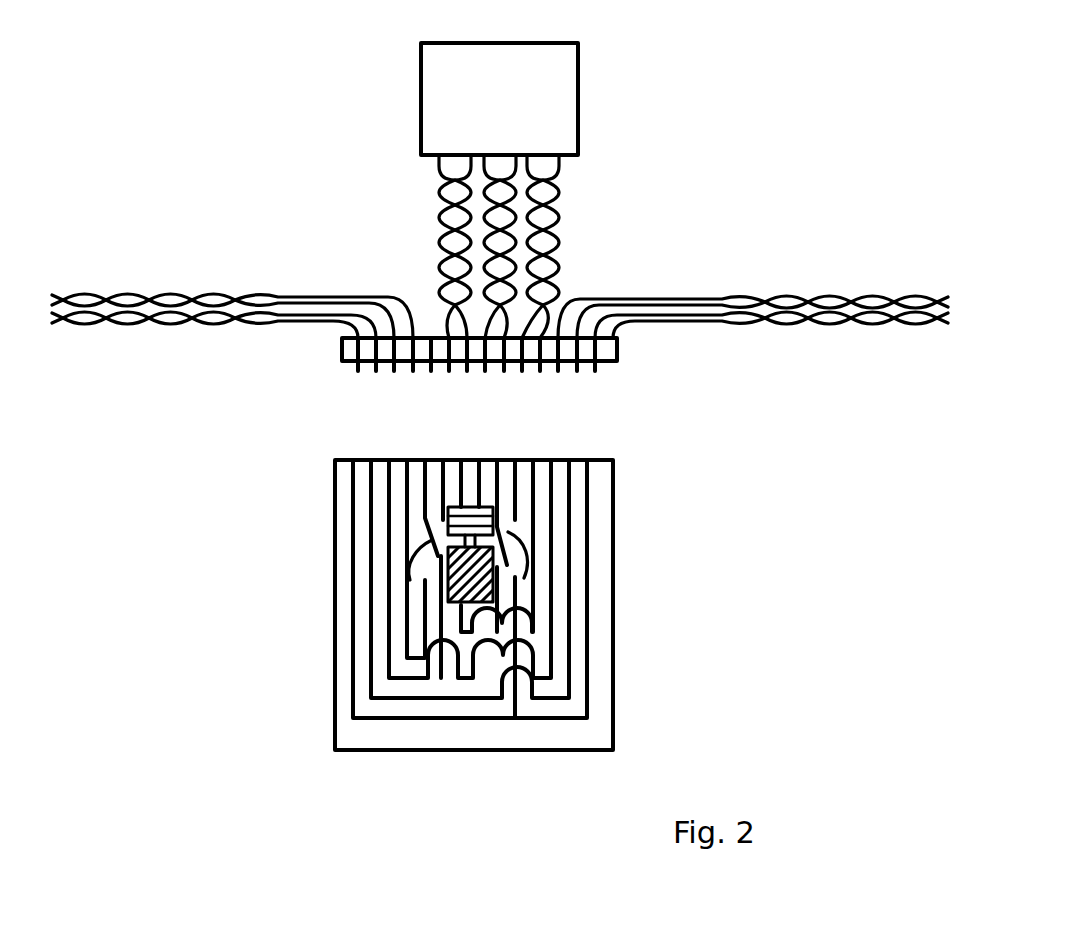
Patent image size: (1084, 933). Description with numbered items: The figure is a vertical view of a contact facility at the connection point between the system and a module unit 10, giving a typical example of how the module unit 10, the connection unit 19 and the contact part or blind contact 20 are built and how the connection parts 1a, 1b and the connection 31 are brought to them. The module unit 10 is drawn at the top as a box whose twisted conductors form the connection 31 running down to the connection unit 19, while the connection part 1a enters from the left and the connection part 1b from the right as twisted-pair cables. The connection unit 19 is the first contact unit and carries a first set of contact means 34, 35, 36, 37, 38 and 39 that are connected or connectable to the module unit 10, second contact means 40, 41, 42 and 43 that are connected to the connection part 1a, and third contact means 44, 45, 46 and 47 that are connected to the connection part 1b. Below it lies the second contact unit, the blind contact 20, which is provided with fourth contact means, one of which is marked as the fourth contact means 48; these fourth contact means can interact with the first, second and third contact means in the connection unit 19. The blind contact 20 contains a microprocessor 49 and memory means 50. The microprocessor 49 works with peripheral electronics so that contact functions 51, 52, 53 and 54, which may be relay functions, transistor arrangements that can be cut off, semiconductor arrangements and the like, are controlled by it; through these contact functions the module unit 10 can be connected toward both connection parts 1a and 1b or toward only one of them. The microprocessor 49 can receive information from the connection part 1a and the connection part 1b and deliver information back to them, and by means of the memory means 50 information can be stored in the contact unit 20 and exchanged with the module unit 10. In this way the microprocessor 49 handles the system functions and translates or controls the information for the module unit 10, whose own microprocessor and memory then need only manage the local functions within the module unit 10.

The module unit 10 is at (547, 129).
The connection 31 is at (633, 236).
The connection part 1a is at (232, 296).
The connection part 1b is at (753, 292).
The connection unit 19 is at (293, 377).
The contact part or blind contact 20 is at (445, 590).
The first contact means 34 is at (431, 371).
The first contact means 35 is at (449, 371).
The first contact means 36 is at (467, 371).
The first contact means 37 is at (485, 371).
The first contact means 38 is at (504, 371).
The first contact means 39 is at (522, 371).
The second contact means 40 is at (358, 371).
The second contact means 41 is at (376, 371).
The second contact means 42 is at (394, 371).
The second contact means 43 is at (413, 371).
The third contact means 44 is at (540, 371).
The third contact means 45 is at (558, 371).
The third contact means 46 is at (577, 371).
The third contact means 47 is at (595, 371).
The fourth contact means 48 is at (605, 468).
The microprocessor 49 is at (455, 601).
The memory means 50 is at (467, 518).
The contact function 51 is at (527, 542).
The contact function 52 is at (507, 534).
The contact function 53 is at (432, 541).
The contact function 54 is at (405, 553).